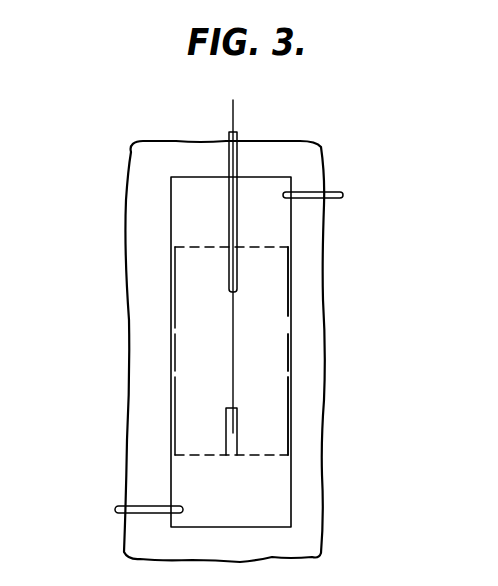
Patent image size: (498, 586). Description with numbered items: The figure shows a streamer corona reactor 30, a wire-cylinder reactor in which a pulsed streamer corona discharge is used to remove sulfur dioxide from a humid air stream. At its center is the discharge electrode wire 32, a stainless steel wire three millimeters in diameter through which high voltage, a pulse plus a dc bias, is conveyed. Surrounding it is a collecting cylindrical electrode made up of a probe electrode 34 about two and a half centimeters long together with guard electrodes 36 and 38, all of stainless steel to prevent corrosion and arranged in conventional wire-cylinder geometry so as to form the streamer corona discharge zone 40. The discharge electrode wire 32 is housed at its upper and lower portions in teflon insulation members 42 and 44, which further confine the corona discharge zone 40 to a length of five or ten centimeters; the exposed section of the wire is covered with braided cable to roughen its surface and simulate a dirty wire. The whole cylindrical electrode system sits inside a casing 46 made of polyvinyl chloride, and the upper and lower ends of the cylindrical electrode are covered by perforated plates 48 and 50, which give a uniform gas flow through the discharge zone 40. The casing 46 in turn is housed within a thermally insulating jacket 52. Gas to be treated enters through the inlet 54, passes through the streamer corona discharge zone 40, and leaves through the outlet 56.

The streamer corona reactor 30 is at (124, 131).
The discharge electrode wire 32 is at (290, 317).
The probe electrode 34 is at (292, 350).
The guard electrode 36 is at (237, 312).
The guard electrode 38 is at (292, 399).
The streamer corona discharge zone 40 is at (215, 346).
The teflon insulation member 42 is at (238, 269).
The teflon insulation member 44 is at (238, 426).
The casing 46 is at (292, 178).
The perforated plate 48 is at (272, 249).
The perforated plate 50 is at (282, 454).
The thermally insulating jacket 52 is at (308, 155).
The inlet 54 is at (118, 507).
The outlet 56 is at (343, 201).